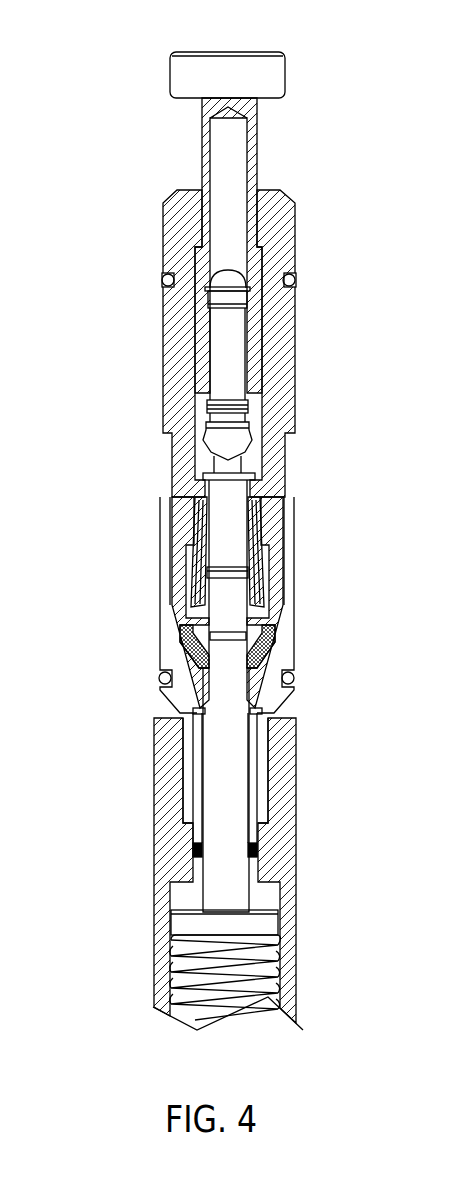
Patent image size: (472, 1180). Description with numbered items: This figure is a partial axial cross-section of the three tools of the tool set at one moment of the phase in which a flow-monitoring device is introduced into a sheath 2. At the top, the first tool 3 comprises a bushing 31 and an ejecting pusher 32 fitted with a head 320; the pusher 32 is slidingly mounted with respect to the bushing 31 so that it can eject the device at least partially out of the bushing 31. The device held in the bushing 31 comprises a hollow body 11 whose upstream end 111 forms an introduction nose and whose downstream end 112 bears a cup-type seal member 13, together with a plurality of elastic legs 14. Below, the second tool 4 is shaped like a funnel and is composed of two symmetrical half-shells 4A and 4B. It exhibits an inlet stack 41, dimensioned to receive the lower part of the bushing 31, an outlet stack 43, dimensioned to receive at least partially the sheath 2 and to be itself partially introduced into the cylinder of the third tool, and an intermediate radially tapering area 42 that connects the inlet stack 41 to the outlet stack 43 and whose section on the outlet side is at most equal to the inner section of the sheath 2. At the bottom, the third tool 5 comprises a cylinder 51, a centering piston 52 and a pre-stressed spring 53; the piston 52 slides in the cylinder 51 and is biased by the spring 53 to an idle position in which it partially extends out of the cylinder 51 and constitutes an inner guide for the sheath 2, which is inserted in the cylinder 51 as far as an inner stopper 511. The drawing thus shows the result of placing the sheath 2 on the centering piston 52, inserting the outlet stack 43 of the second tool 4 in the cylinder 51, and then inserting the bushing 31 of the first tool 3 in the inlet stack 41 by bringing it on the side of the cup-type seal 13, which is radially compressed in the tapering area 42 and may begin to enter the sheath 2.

The head 320 is at (190, 70).
The first tool 3 is at (65, 170).
The bushing 31 is at (203, 143).
The ejecting pusher 32 is at (165, 258).
The upstream end 111 is at (233, 278).
The hollow body 11 is at (276, 568).
The downstream end 112 is at (250, 670).
The elastic legs 14 is at (250, 552).
The cup-type seal member 13 is at (267, 627).
The half-shell 4A is at (155, 490).
The half-shell 4B is at (303, 494).
The second tool 4 is at (75, 610).
The inlet stack 41 is at (163, 588).
The radially tapering area 42 is at (172, 657).
The outlet stack 43 is at (187, 747).
The sheath 2 is at (257, 783).
The third tool 5 is at (75, 875).
The cylinder 51 is at (170, 862).
The inner stopper 511 is at (257, 853).
The centering piston 52 is at (215, 888).
The pre-stressed spring 53 is at (170, 1008).